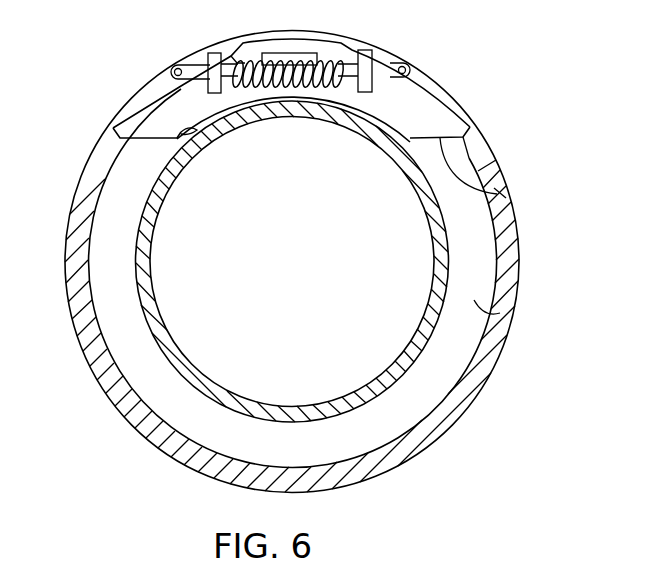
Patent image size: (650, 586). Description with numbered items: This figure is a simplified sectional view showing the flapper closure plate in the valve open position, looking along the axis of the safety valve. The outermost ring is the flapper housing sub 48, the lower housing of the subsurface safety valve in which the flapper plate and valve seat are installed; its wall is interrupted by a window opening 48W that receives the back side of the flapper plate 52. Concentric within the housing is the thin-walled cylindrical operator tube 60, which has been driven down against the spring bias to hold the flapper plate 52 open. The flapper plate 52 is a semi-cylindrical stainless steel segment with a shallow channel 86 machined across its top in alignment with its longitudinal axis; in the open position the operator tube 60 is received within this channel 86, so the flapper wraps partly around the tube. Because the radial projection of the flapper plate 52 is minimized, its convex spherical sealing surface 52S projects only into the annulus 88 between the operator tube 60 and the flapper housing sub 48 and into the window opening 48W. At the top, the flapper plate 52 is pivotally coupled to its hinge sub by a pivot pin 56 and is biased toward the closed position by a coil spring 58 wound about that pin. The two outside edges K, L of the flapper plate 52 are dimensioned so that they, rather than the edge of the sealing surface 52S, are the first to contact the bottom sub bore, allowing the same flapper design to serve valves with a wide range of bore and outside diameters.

The flapper housing sub 48 is at (508, 249).
The window opening 48W is at (485, 165).
The flapper plate 52 is at (412, 111).
The convex spherical sealing surface 52S is at (503, 193).
The pivot pin 56 is at (194, 65).
The coil spring 58 is at (373, 46).
The operator tube 60 is at (142, 278).
The channel 86 is at (178, 133).
The annulus 88 is at (490, 315).
The outside edge K is at (242, 44).
The outside edge L is at (334, 58).